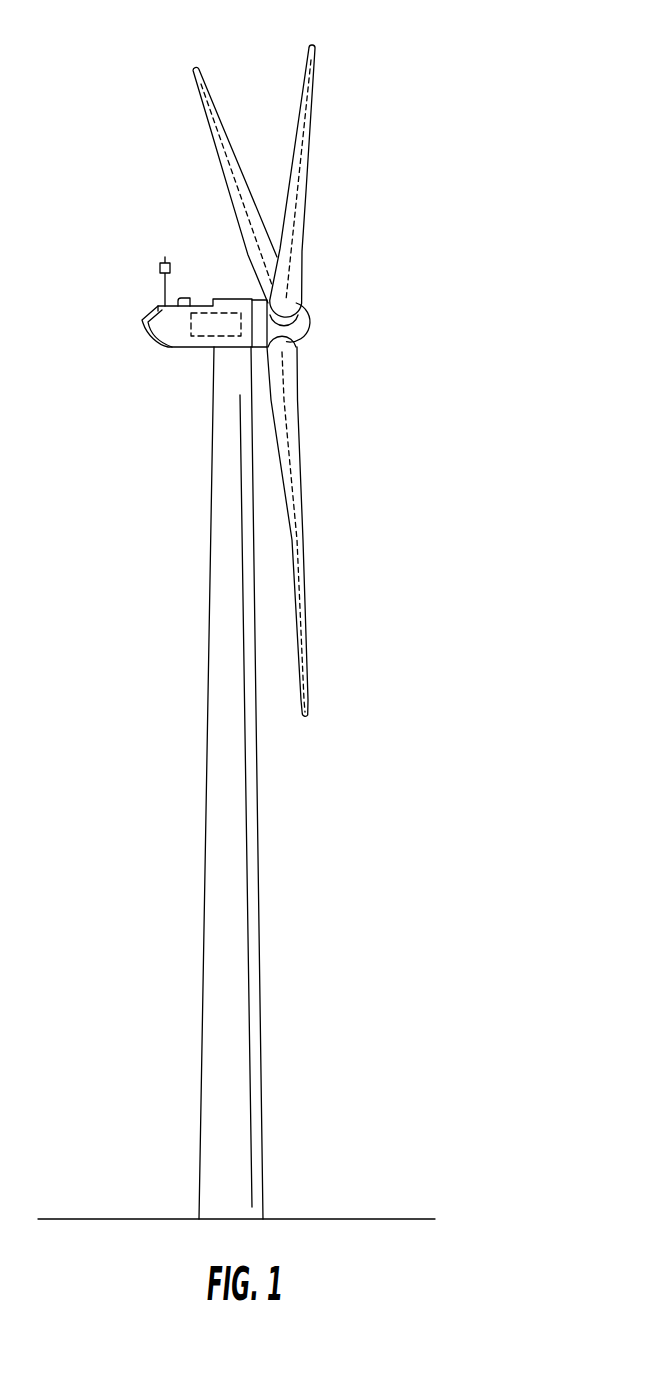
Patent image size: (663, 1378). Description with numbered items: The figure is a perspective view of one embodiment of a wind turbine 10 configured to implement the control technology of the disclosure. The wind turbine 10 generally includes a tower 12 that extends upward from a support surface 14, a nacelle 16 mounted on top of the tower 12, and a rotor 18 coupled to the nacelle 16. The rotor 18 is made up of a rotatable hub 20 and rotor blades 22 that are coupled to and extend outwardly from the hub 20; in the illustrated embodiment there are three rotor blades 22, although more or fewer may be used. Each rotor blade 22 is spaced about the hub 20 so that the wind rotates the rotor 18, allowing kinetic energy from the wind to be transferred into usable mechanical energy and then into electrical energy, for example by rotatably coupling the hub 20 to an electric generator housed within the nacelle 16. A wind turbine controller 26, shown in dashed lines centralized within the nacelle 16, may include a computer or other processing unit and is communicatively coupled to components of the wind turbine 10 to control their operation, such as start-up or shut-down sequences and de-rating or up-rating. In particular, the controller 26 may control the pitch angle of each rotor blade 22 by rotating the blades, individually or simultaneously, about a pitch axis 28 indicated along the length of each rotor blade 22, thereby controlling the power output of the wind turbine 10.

The wind turbine 10 is at (435, 170).
The tower 12 is at (253, 908).
The support surface 14 is at (120, 1218).
The nacelle 16 is at (177, 333).
The rotor 18 is at (315, 300).
The rotatable hub 20 is at (313, 328).
The rotor blade 22 is at (293, 159).
The wind turbine controller 26 is at (208, 313).
The pitch axis 28 is at (235, 208).